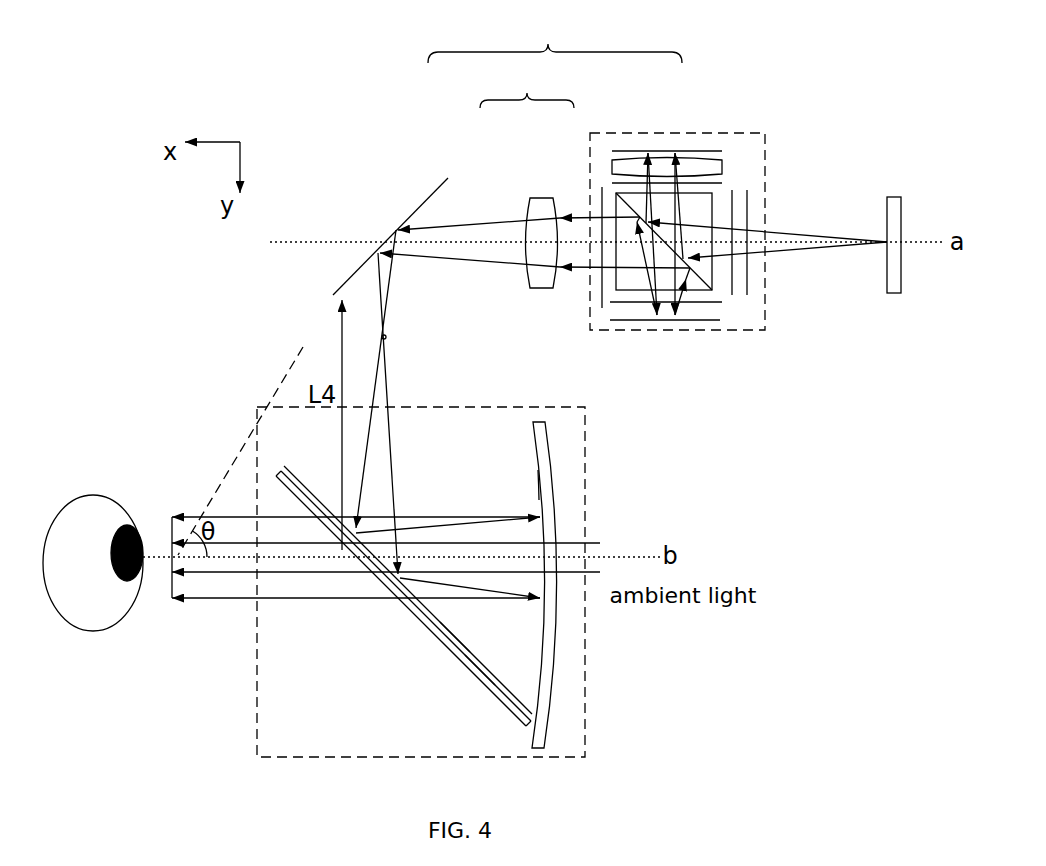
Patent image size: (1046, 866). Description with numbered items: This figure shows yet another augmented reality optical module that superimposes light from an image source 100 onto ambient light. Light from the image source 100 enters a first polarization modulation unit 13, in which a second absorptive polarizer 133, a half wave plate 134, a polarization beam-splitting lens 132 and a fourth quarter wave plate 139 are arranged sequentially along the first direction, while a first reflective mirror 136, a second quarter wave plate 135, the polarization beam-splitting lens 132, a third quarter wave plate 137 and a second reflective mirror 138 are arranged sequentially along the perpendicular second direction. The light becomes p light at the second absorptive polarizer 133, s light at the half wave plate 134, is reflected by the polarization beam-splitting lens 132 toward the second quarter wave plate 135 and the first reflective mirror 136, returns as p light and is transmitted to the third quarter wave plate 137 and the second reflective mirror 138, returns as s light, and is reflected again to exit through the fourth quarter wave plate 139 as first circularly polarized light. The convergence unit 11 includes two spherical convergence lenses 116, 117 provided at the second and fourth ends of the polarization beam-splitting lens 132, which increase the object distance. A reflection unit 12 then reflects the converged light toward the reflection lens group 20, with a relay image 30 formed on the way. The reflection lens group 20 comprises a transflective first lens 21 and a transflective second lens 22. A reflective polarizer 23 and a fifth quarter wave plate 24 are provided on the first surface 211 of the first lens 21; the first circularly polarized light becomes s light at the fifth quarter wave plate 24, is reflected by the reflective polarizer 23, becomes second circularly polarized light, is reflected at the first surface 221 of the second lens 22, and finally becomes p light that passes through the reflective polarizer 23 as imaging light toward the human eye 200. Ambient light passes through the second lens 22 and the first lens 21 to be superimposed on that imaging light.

The convergence unit 11 is at (555, 62).
The reflection unit 12 is at (448, 178).
The first polarization modulation unit 13 is at (657, 133).
The reflection lens group 20 is at (245, 443).
The first lens 21 is at (275, 478).
The second lens 22 is at (546, 424).
The reflective polarizer 23 is at (462, 646).
The fifth quarter wave plate 24 is at (492, 670).
The relay image 30 is at (391, 337).
The image source 100 is at (893, 197).
The convergence lens 116 is at (600, 163).
The convergence lens 117 is at (527, 197).
The polarization beam-splitting lens 132 is at (614, 197).
The second absorptive polarizer 133 is at (748, 193).
The half wave plate 134 is at (732, 297).
The second quarter wave plate 135 is at (722, 170).
The first reflective mirror 136 is at (722, 150).
The third quarter wave plate 137 is at (722, 305).
The second reflective mirror 138 is at (670, 322).
The fourth quarter wave plate 139 is at (602, 310).
The human eye 200 is at (97, 495).
The first surface of the first lens 211 is at (291, 476).
The first surface of the second lens 221 is at (532, 485).